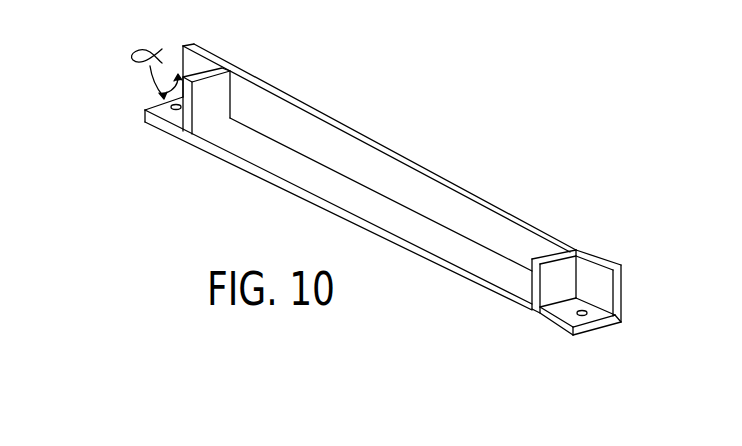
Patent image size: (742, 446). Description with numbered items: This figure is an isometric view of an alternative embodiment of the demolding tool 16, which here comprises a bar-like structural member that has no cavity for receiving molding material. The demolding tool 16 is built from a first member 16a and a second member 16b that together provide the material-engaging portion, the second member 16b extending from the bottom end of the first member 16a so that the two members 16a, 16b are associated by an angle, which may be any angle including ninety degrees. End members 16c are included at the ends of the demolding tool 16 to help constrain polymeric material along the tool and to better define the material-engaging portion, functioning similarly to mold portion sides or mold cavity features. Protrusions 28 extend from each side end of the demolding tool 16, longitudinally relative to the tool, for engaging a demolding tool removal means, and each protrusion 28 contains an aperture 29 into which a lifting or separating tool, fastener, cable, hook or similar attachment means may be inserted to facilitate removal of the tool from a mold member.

The demolding tool 16 is at (403, 207).
The first member 16a is at (477, 224).
The second member 16b is at (441, 247).
The end member 16c is at (206, 75).
The protrusion 28 is at (177, 125).
The aperture 29 is at (146, 116).